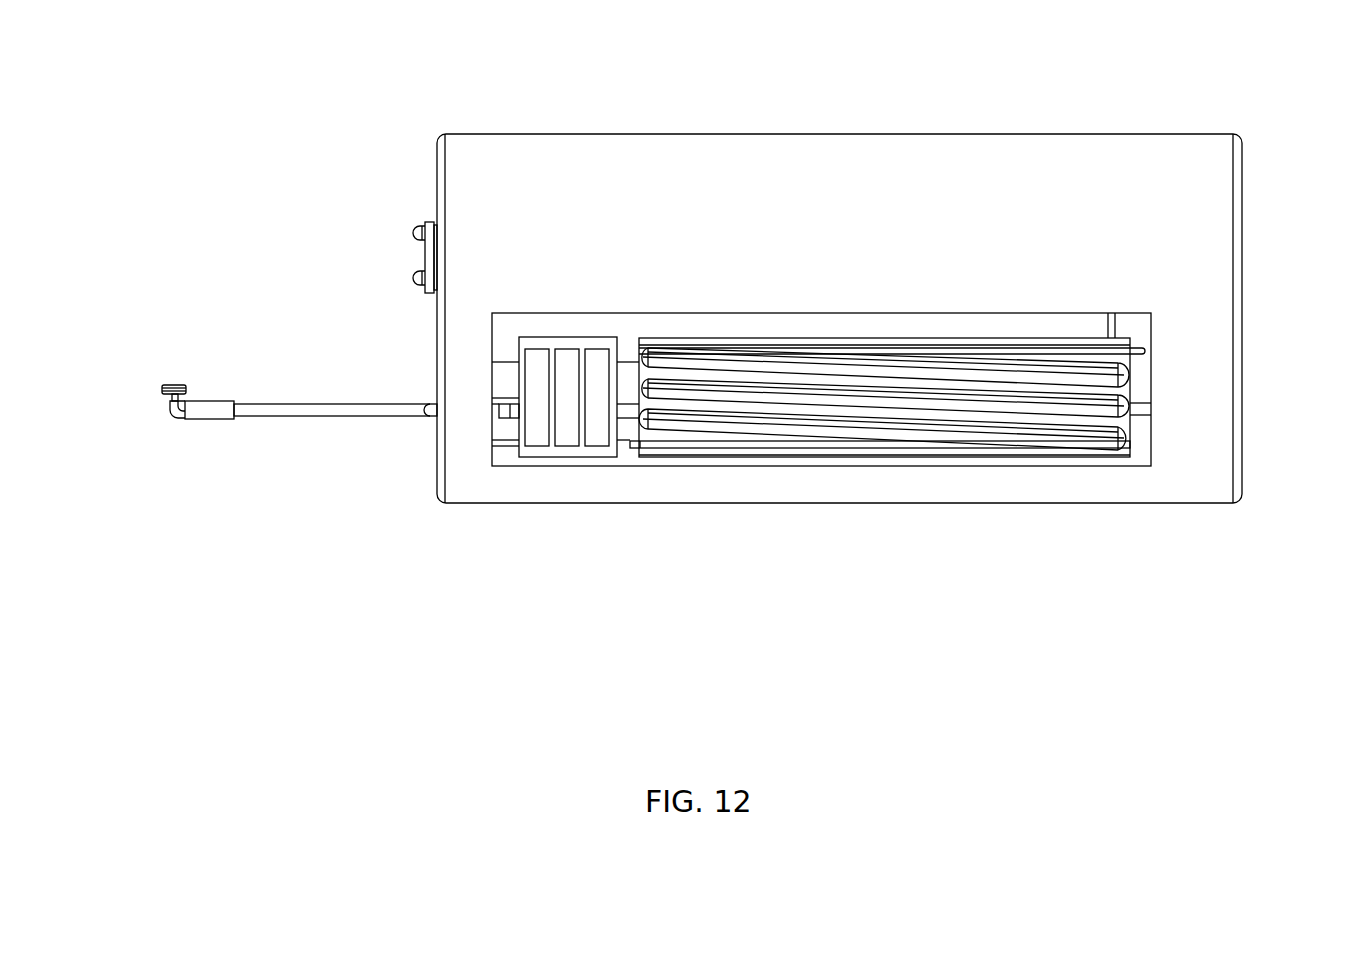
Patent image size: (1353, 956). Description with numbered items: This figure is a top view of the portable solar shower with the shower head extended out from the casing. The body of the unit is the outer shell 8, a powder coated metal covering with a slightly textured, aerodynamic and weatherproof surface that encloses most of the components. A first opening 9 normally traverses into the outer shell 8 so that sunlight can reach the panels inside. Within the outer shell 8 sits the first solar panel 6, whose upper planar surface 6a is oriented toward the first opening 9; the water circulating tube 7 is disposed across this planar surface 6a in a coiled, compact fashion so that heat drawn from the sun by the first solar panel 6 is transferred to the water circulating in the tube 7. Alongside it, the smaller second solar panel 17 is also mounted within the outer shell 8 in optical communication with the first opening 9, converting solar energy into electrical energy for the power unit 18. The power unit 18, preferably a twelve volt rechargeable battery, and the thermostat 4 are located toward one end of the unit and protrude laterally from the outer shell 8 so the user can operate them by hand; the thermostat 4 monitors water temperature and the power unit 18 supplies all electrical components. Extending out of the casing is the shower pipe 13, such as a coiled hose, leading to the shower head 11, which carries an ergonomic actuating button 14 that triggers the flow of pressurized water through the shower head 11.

The thermostat 4 is at (432, 222).
The first solar panel 6 is at (648, 450).
The planar surface 6a is at (952, 343).
The water circulating tube 7 is at (728, 350).
The outer shell 8 is at (1007, 148).
The first opening 9 is at (1070, 330).
The shower head 11 is at (172, 384).
The shower pipe 13 is at (360, 412).
The actuating button 14 is at (213, 420).
The second solar panel 17 is at (566, 338).
The power unit 18 is at (424, 270).